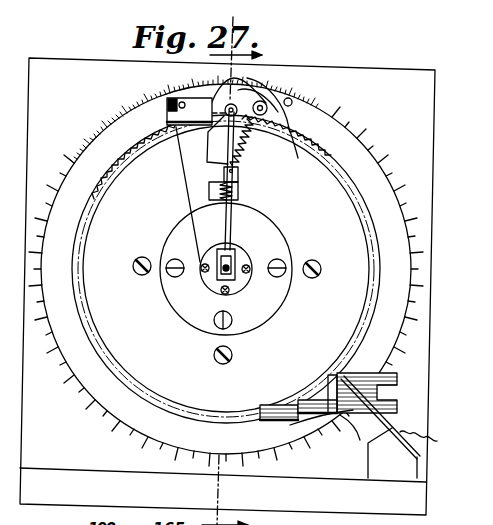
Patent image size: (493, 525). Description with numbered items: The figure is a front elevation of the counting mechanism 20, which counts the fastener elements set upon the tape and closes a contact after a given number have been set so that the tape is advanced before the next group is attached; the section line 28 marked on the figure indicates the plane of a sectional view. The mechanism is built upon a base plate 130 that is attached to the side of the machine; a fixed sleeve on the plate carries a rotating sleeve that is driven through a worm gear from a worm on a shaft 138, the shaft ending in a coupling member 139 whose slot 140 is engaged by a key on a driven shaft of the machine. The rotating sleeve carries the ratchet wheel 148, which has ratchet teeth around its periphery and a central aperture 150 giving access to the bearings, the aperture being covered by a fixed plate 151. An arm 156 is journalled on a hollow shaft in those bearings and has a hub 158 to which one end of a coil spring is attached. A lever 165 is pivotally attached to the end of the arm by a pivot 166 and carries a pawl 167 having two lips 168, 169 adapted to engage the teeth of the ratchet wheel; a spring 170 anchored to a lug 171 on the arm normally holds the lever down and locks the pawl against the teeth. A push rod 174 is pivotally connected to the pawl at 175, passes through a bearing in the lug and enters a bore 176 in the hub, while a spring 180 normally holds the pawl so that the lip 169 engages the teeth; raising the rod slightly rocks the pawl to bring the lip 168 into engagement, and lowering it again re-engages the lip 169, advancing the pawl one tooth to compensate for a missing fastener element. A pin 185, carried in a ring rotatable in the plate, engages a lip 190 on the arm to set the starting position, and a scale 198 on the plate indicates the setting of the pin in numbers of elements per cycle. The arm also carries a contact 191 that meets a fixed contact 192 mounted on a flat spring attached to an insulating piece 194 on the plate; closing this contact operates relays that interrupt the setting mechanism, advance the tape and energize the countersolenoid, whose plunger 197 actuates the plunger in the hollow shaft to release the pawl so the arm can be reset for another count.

The counting mechanism 20 is at (430, 131).
The section line 28 is at (234, 271).
The base plate 130 is at (404, 382).
The shaft 138 is at (355, 418).
The coupling member 139 is at (368, 375).
The slot 140 is at (393, 393).
The ratchet wheel 148 is at (141, 313).
The central aperture 150 is at (265, 324).
The fixed plate 151 is at (273, 288).
The arm 156 is at (187, 195).
The hub 158 is at (216, 285).
The lever 165 is at (237, 92).
The pivot 166 is at (175, 129).
The pawl 167 is at (280, 118).
The lip 168 is at (277, 128).
The lip 169 is at (220, 134).
The spring 170 is at (242, 144).
The lug 171 is at (238, 180).
The push rod 174 is at (232, 215).
The pivotal connection 175 is at (272, 92).
The bore 176 is at (232, 243).
The spring 180 is at (238, 195).
The pin 185 is at (292, 101).
The lip 190 is at (215, 92).
The contact 191 is at (166, 107).
The fixed contact 192 is at (298, 421).
The insulating piece 194 is at (390, 463).
The plunger 197 is at (492, 322).
The scale 198 is at (347, 127).